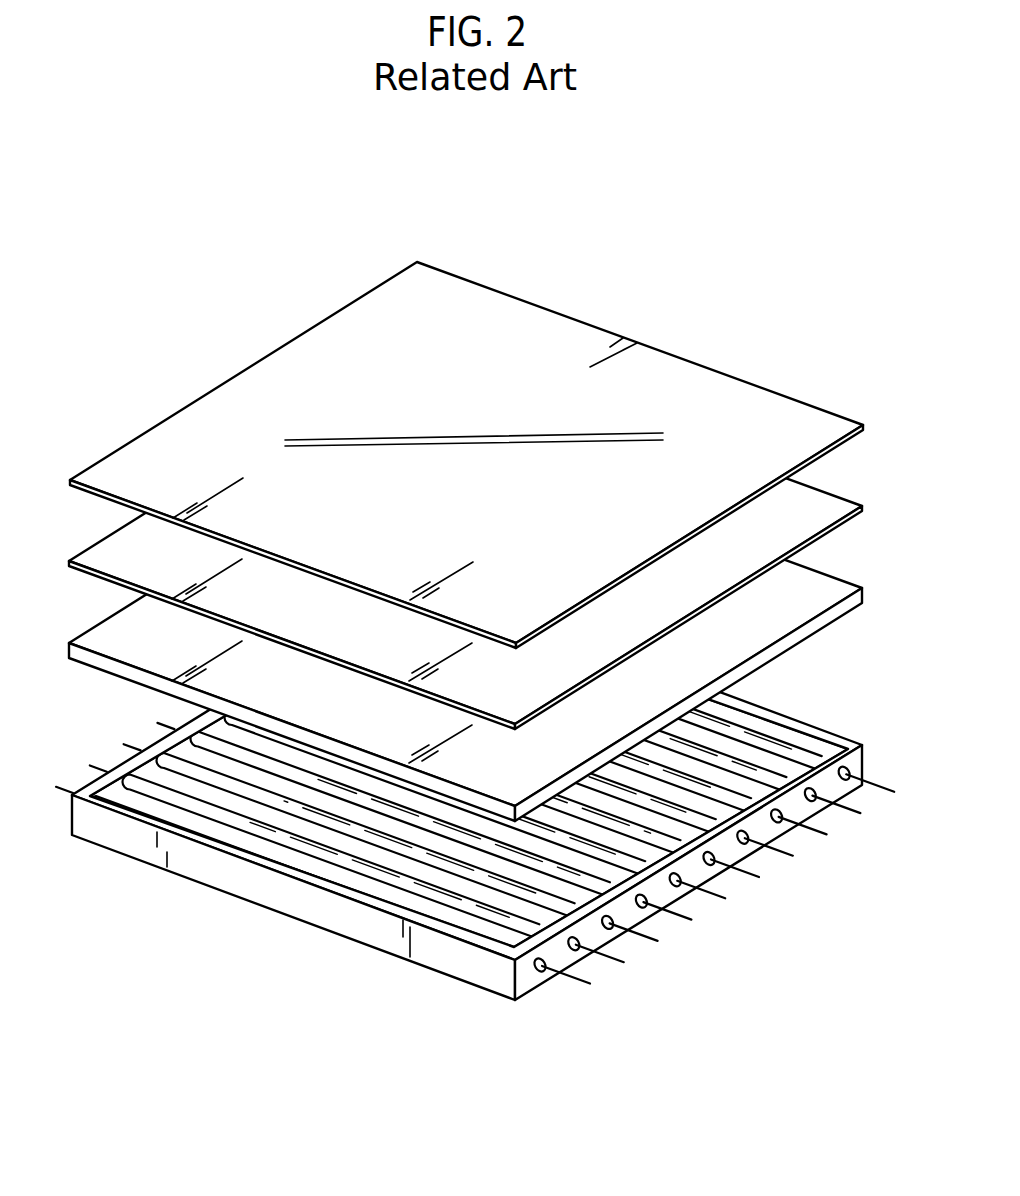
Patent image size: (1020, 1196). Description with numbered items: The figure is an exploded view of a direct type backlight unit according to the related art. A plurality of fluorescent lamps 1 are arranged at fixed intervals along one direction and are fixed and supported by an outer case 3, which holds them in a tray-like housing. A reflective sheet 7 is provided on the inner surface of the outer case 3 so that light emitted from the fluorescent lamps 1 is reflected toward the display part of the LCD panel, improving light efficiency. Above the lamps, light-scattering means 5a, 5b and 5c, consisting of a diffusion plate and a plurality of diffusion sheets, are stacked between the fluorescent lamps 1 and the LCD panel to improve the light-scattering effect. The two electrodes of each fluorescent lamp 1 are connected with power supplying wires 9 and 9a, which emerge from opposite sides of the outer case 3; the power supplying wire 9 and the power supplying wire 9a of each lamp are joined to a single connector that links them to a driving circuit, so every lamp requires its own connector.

The fluorescent lamp 1 is at (308, 845).
The outer case 3 is at (493, 973).
The light-scattering means 5a is at (812, 585).
The light-scattering means 5b is at (812, 500).
The light-scattering means 5c is at (812, 414).
The reflective sheet 7 is at (420, 870).
The power supplying wire 9 is at (568, 982).
The power supplying wire 9a is at (62, 788).